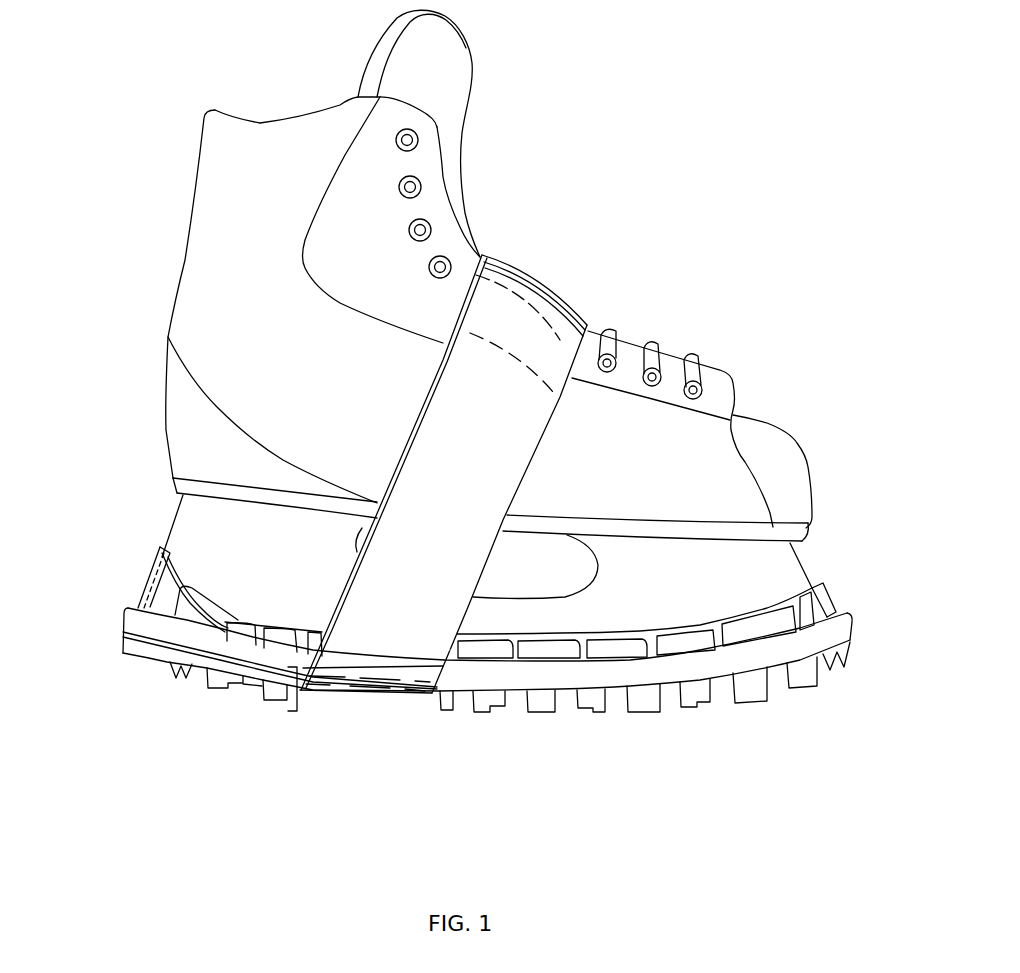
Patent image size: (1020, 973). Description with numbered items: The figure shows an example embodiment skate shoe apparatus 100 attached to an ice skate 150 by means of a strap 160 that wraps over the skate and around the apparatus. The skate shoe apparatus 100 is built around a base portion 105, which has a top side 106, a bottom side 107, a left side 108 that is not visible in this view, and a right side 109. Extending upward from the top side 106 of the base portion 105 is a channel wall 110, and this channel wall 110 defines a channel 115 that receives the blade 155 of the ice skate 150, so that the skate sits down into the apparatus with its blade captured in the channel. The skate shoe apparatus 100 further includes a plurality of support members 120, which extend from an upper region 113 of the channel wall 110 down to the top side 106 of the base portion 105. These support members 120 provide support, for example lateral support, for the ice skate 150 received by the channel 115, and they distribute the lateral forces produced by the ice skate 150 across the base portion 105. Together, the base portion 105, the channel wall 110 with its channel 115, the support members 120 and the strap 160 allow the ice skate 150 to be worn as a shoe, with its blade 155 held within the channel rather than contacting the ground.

The skate shoe apparatus 100 is at (457, 743).
The base portion 105 is at (120, 620).
The top side 106 is at (233, 623).
The bottom side 107 is at (513, 697).
The left side 108 is at (255, 688).
The right side 109 is at (290, 668).
The channel wall 110 is at (185, 607).
The upper region 113 is at (817, 592).
The channel 115 is at (568, 632).
The support members 120 is at (592, 658).
The ice skate 150 is at (217, 300).
The blade 155 is at (750, 572).
The strap 160 is at (545, 325).